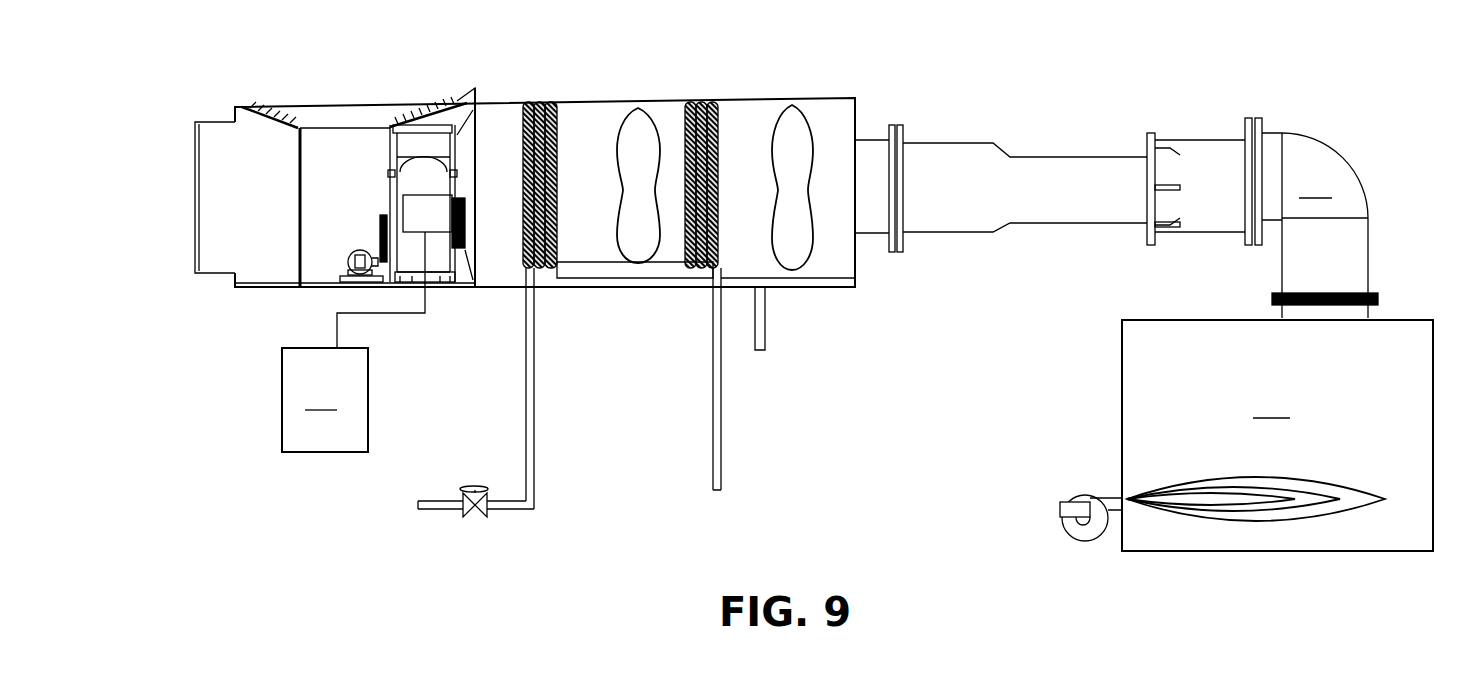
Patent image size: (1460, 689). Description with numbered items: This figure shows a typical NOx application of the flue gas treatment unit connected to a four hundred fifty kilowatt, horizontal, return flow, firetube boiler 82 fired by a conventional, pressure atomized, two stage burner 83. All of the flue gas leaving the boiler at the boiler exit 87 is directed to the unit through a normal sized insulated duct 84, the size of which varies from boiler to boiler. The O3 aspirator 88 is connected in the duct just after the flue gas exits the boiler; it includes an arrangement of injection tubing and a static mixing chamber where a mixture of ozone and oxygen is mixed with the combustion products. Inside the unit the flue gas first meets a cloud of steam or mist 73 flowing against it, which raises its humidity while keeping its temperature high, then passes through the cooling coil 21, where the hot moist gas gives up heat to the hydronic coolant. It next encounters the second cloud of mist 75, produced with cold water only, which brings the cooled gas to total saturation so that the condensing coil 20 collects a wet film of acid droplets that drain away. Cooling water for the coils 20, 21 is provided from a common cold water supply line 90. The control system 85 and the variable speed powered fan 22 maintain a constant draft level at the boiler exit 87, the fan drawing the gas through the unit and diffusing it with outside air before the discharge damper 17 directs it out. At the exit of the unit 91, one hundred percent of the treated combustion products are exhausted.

The discharge damper 17 is at (182, 148).
The exit of the unit 91 is at (163, 125).
The powered fan 22 is at (422, 212).
The control system 85 is at (353, 373).
The condensing coil 20 is at (538, 102).
The cooling coil 21 is at (697, 102).
The second cloud of mist 75 is at (640, 120).
The cloud of steam or mist 73 is at (792, 107).
The O3 aspirator 88 is at (1002, 143).
The insulated duct 84 is at (1315, 225).
The boiler exit 87 is at (1373, 310).
The firetube boiler 82 is at (1277, 435).
The two stage burner 83 is at (1063, 523).
The cold water supply line 90 is at (470, 517).